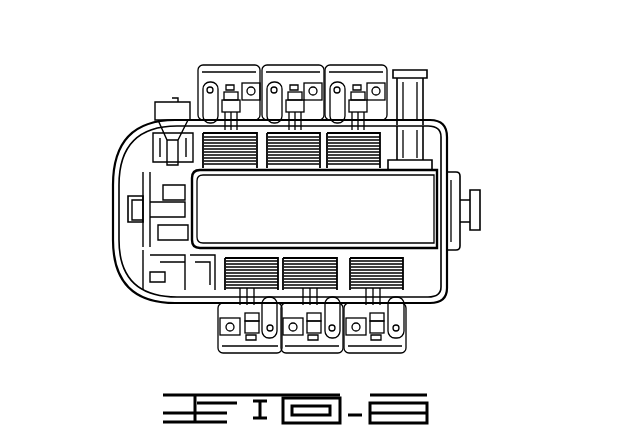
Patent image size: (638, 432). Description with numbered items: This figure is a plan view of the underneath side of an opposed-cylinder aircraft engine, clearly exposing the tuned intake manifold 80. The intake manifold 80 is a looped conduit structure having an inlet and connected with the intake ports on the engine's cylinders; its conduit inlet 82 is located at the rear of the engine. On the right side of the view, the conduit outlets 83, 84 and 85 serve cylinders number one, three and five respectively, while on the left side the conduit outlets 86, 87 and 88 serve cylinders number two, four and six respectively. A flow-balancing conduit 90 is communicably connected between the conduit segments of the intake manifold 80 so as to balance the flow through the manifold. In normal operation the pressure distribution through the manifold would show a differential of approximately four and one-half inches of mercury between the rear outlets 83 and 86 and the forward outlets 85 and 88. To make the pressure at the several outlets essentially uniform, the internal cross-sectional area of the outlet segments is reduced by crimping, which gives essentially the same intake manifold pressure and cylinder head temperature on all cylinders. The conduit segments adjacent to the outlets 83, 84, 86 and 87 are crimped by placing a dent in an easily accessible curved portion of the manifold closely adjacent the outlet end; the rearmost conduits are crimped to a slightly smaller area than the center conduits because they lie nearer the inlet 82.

The intake manifold 80 is at (106, 132).
The conduit inlet 82 is at (128, 194).
The conduit outlet 83 is at (196, 84).
The conduit outlet 84 is at (281, 82).
The conduit outlet 85 is at (365, 95).
The conduit outlet 86 is at (319, 336).
The conduit outlet 87 is at (401, 336).
The conduit outlet 88 is at (410, 330).
The flow-balancing conduit 90 is at (447, 148).